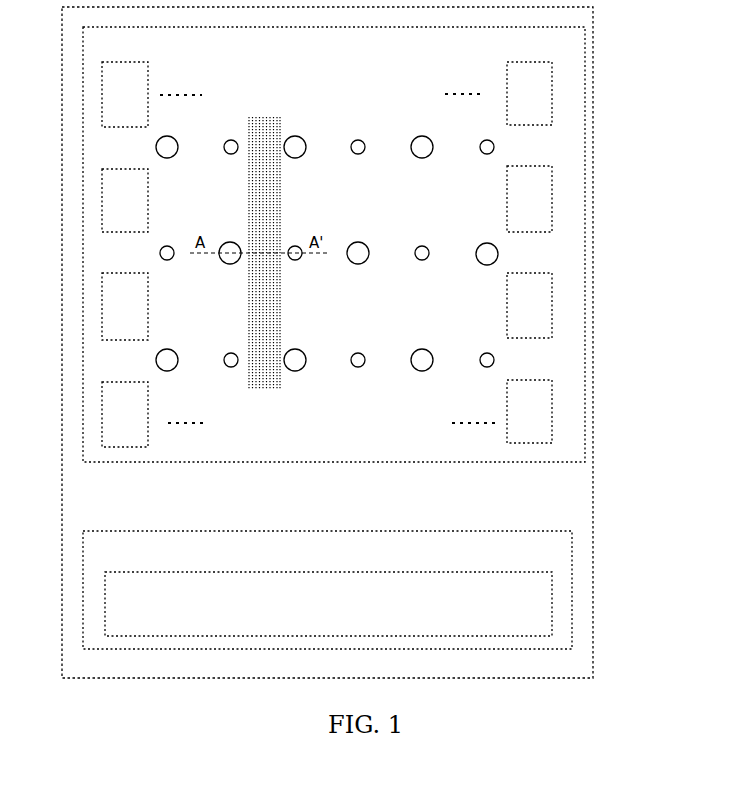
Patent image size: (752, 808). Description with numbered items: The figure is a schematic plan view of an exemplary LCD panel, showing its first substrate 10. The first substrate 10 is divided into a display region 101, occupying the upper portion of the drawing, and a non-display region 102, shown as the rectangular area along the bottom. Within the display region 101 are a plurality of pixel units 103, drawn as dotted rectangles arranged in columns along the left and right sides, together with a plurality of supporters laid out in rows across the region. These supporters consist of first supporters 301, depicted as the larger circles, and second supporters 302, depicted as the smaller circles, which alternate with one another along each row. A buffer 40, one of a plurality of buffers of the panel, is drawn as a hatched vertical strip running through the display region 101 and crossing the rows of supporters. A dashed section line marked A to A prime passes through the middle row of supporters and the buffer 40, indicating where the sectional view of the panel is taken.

The first substrate 10 is at (593, 108).
The display region 101 is at (572, 245).
The non-display region 102 is at (558, 572).
The pixel unit 103 is at (536, 410).
The first supporter 301 is at (295, 136).
The second supporter 302 is at (358, 140).
The buffer 40 is at (260, 390).